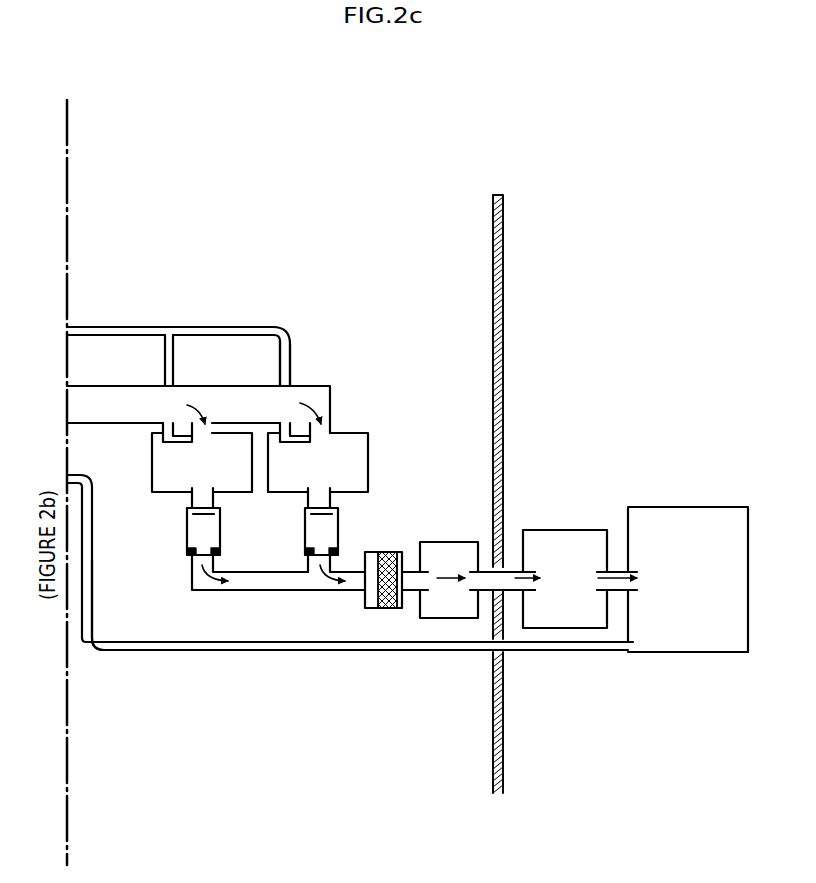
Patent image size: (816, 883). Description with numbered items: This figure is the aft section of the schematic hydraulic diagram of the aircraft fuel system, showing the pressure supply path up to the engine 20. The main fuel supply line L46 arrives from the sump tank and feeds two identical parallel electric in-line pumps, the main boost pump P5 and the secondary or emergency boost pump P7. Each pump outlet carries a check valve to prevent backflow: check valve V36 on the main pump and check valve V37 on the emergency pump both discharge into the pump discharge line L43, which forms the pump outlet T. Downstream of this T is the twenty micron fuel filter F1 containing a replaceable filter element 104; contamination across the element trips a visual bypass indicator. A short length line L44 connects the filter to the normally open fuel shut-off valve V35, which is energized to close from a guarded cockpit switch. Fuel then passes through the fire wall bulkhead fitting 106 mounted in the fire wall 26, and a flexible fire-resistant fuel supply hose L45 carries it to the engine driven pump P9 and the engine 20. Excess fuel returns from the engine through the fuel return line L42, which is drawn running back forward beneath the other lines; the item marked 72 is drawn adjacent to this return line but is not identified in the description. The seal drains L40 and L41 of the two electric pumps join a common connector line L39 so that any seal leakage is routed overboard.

The common connector line L39 is at (93, 331).
The electric fuel pump seal drain L40 is at (174, 376).
The electric fuel pump seal drain L41 is at (286, 372).
The main fuel supply line L46 is at (97, 402).
The pump discharge line L43 is at (284, 583).
The fuel return line L42 is at (309, 650).
The short length line L44 is at (415, 598).
The flexible fire-resistant fuel supply hose L45 is at (513, 589).
The fuel return line 72 is at (218, 652).
The replaceable filter element 104 is at (376, 606).
The fire wall bulkhead fitting 106 is at (503, 568).
The check valve V36 is at (220, 540).
The check valve V37 is at (338, 540).
The fuel shut-off valve V35 is at (487, 530).
The fuel filter F1 is at (400, 552).
The main boost pump P5 is at (152, 468).
The secondary or emergency boost pump P7 is at (370, 468).
The engine driven pump P9 is at (596, 530).
The fire wall 26 is at (504, 242).
The engine 20 is at (732, 507).